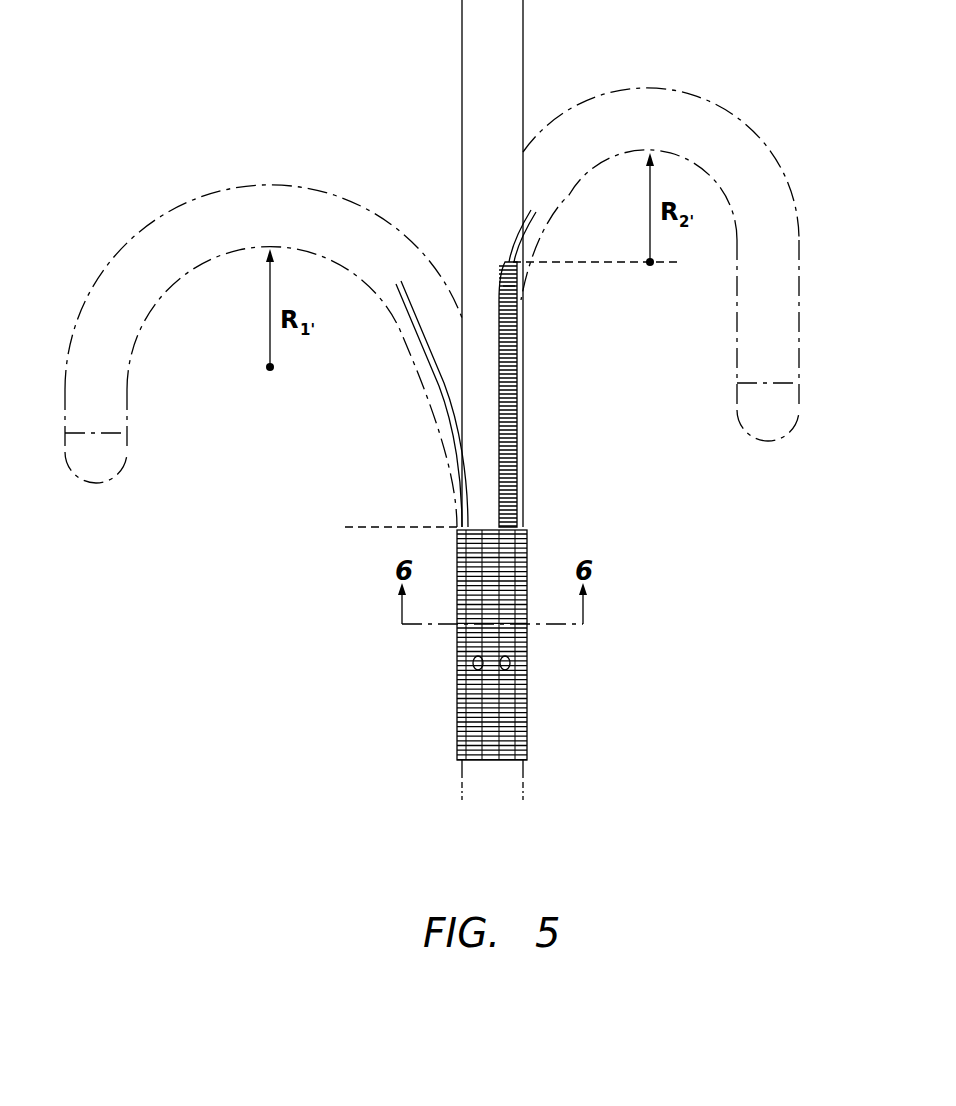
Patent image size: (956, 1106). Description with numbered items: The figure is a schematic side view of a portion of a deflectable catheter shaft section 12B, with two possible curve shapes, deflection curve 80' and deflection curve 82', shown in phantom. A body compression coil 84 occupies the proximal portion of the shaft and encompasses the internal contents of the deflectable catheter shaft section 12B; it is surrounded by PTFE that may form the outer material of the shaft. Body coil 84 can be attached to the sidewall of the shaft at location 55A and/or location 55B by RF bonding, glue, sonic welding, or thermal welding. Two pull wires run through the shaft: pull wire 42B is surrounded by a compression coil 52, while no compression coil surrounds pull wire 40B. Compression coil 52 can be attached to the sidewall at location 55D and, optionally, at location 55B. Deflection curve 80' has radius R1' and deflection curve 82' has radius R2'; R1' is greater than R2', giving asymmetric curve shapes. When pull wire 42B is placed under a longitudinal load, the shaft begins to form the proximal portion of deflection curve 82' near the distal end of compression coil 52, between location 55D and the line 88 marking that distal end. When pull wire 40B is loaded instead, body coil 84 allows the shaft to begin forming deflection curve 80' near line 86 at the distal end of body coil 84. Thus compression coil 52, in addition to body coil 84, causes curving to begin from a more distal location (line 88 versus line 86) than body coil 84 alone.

The deflectable catheter shaft section 12B is at (523, 53).
The deflection curve 80' is at (263, 348).
The deflection curve 82' is at (664, 252).
The pull wire 40B is at (425, 340).
The pull wire 42B is at (521, 243).
The compression coil 52 is at (516, 442).
The location 55D is at (512, 292).
The body compression coil 84 is at (527, 702).
The location 55A is at (458, 661).
The location 55B is at (528, 662).
The line 86 is at (384, 531).
The line 88 is at (611, 264).